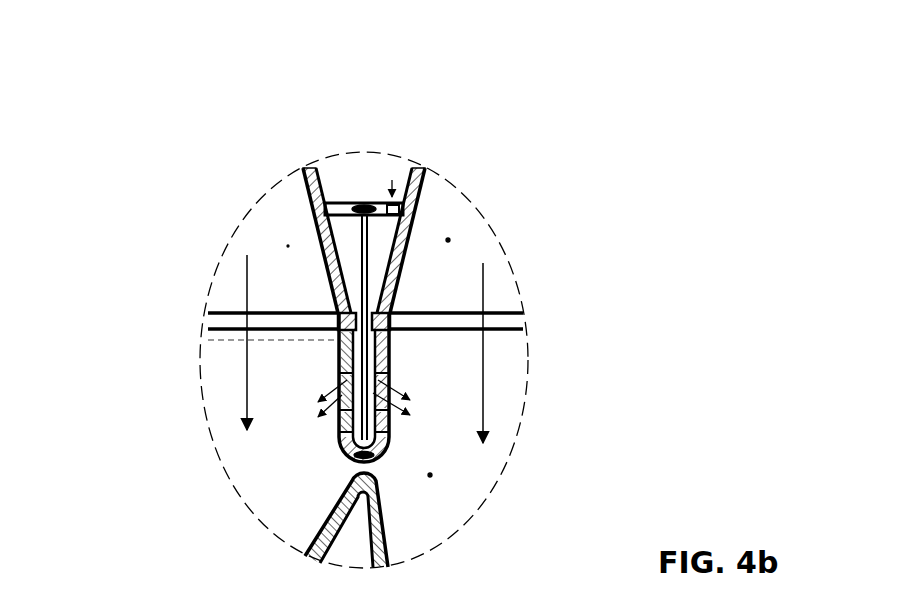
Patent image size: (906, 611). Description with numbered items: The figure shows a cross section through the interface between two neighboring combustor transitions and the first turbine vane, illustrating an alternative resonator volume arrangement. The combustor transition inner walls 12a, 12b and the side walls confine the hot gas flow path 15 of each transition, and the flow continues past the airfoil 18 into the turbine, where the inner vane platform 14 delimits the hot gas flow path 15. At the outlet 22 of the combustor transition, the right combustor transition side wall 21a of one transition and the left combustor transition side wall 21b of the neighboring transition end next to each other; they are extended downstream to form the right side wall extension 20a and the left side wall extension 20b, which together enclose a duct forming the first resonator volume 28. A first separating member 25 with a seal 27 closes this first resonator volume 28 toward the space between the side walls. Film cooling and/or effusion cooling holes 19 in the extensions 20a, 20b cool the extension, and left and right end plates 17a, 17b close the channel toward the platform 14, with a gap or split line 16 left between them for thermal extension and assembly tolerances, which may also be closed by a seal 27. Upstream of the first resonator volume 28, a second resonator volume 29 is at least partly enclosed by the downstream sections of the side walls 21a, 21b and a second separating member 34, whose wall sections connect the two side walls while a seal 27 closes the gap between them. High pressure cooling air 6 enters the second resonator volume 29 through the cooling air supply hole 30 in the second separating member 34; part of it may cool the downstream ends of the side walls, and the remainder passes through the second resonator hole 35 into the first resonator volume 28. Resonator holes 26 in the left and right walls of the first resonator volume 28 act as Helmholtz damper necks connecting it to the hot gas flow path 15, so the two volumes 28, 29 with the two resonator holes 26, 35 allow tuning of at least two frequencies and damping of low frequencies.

The high pressure cooling air 6 is at (391, 180).
The combustor transition inner wall 12a is at (334, 318).
The combustor transition inner wall 12b is at (448, 240).
The inner vane platform 14 is at (430, 475).
The hot gas flow path 15 is at (243, 289).
The gap or split line 16 is at (343, 432).
The left end plate 17a is at (352, 416).
The right end plate 17b is at (380, 417).
The airfoil 18 is at (387, 533).
The film cooling and/or effusion cooling holes 19 is at (438, 402).
The right side wall extension 20a is at (345, 393).
The left side wall extension 20b is at (412, 399).
The combustor transition side wall 21a is at (302, 185).
The combustor transition side wall 21b is at (427, 192).
The outlet of the combustor transition 22 is at (230, 265).
The first separating member 25 is at (288, 245).
The resonator hole 26 is at (342, 340).
The seal 27 is at (362, 205).
The first resonator volume 28 is at (510, 311).
The second resonator volume 29 is at (500, 296).
The cooling air supply hole 30 is at (400, 200).
The second separating member 34 is at (333, 205).
The second resonator hole 35 is at (185, 340).